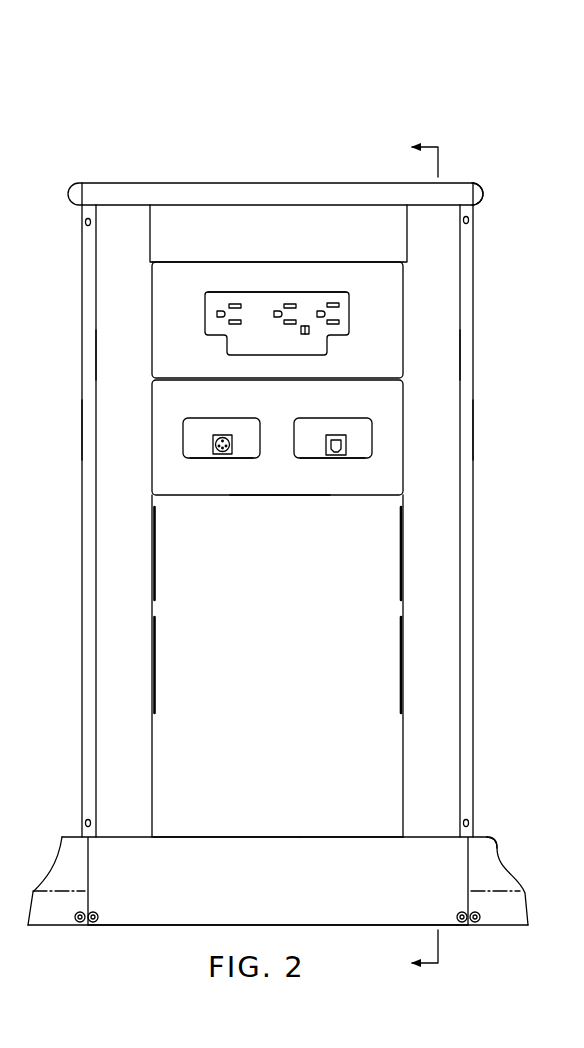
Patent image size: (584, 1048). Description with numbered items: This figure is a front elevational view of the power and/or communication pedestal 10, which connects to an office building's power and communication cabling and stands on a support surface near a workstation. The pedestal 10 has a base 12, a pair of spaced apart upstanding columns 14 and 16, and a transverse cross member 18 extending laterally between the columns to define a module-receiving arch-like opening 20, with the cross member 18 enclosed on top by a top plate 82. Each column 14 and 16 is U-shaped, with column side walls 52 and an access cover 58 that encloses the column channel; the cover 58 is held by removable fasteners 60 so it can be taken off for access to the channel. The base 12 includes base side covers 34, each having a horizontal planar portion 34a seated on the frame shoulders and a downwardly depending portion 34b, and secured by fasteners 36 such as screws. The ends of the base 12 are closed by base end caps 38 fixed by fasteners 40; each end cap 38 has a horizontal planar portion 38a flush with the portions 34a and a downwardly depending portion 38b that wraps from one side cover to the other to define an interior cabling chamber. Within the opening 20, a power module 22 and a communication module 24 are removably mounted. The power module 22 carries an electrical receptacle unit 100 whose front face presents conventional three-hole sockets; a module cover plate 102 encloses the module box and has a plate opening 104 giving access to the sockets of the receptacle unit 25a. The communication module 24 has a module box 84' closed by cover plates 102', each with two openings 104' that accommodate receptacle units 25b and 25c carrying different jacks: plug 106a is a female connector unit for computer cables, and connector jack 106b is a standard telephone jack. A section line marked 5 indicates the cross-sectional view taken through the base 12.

The power and/or communication pedestal 10 is at (237, 86).
The base 12 is at (372, 928).
The upstanding column 14 is at (112, 250).
The upstanding column 16 is at (450, 535).
The top or transverse cross member 18 is at (378, 220).
The module-receiving arch-like opening 20 is at (384, 745).
The power module 22 is at (400, 314).
The communication module 24 is at (400, 402).
The receptacle unit 25a is at (345, 294).
The receptacle unit 25b is at (193, 450).
The receptacle unit 25c is at (364, 448).
The base side cover 34 is at (396, 922).
The horizontal planar portion 34a is at (243, 836).
The downwardly depending portion 34b is at (301, 850).
The fastener 36 is at (93, 923).
The base end cap 38 is at (68, 852).
The horizontal planar portion 38a is at (487, 840).
The downwardly depending portion 38b is at (520, 905).
The fastener 40 is at (78, 922).
The column side wall 52 is at (112, 352).
The access cover 58 is at (84, 440).
The removable fastener 60 is at (85, 221).
The top plate 82 is at (446, 190).
The module housing or box 84' is at (305, 515).
The electrical receptacle unit 100 is at (278, 283).
The module cover plate 102 is at (277, 244).
The module cover plate 102' is at (251, 514).
The plate opening 104 is at (278, 272).
The module opening 104' is at (270, 492).
The plug 106a is at (221, 435).
The connector jack 106b is at (336, 435).
The section line for FIG. 5 is at (427, 557).